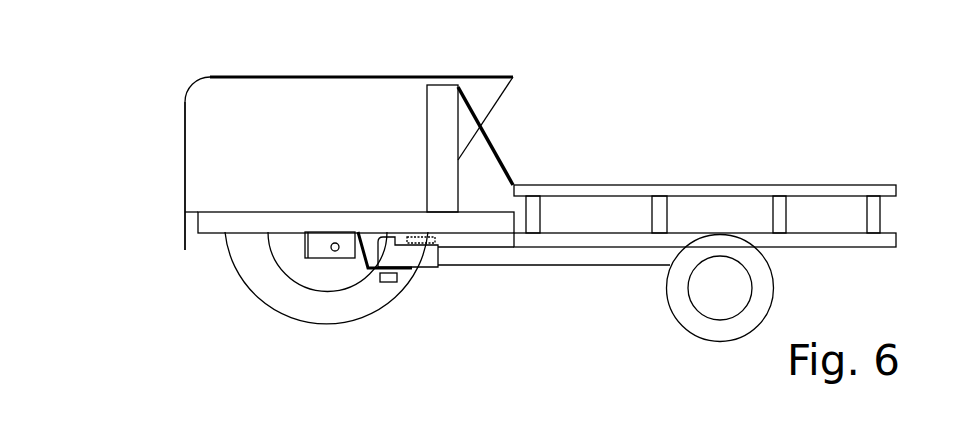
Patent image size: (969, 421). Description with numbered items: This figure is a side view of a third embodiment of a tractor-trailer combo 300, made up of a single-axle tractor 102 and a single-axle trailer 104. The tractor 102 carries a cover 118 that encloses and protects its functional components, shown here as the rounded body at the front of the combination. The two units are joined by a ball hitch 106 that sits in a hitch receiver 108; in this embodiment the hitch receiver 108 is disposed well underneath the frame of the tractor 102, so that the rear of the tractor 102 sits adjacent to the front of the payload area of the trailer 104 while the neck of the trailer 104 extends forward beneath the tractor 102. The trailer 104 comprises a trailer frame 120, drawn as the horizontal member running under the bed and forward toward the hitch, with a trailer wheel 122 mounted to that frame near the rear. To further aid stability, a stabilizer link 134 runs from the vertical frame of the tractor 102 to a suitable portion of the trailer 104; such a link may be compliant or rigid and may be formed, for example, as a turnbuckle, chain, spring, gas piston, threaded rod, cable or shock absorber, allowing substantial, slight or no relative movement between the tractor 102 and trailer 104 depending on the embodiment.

The tractor-trailer combo 300 is at (145, 57).
The single-axle tractor 102 is at (332, 75).
The cover 118 is at (182, 148).
The stabilizer link 134 is at (492, 132).
The single-axle trailer 104 is at (663, 182).
The trailer frame 120 is at (627, 253).
The hitch receiver 108 is at (337, 262).
The ball hitch 106 is at (383, 278).
The trailer wheel 122 is at (707, 342).